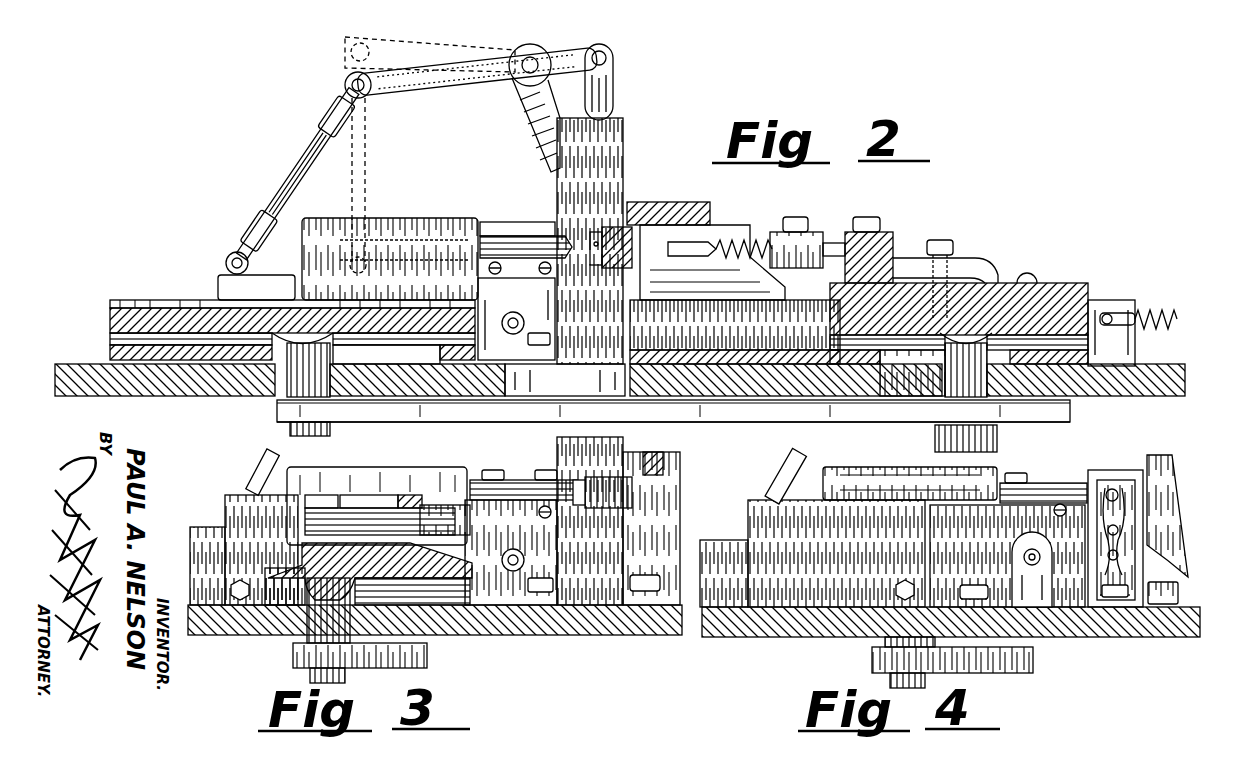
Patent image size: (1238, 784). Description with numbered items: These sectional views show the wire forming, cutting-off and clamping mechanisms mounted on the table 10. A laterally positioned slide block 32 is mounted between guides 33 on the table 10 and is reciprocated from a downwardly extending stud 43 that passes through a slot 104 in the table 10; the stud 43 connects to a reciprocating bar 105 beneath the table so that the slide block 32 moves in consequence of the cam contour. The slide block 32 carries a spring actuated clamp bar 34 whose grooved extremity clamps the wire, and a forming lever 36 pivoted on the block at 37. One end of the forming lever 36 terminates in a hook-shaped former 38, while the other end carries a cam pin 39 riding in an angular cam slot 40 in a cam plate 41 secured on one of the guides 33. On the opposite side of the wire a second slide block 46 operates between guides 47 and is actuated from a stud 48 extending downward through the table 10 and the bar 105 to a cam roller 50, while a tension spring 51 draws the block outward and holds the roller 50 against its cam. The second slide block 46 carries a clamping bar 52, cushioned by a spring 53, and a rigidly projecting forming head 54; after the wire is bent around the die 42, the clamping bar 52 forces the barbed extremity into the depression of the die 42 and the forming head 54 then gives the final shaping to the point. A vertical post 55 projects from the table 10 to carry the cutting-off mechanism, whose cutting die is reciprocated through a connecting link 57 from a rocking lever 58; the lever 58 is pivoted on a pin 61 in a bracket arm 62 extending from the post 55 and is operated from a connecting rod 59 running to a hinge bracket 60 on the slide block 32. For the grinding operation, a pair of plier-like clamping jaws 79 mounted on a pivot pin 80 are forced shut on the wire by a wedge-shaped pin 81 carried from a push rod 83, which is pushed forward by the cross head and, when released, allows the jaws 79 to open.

In FIG. 2, the table 10 is at (86, 366).
In FIG. 2, the slide block 32 is at (110, 316).
In FIG. 3, the slide block 32 is at (290, 545).
In FIG. 4, the guides 33 is at (738, 548).
In FIG. 2, the clamp bar 34 is at (495, 242).
In FIG. 3, the forming lever 36 is at (400, 520).
In FIG. 3, the pivot 37 is at (435, 505).
In FIG. 3, the hook-shaped former 38 is at (526, 490).
In FIG. 4, the hook-shaped former 38 is at (1062, 492).
In FIG. 3, the cam pin 39 is at (318, 496).
In FIG. 3, the cam slot 40 is at (362, 496).
In FIG. 3, the cam plate 41 is at (392, 496).
In FIG. 4, the cam plate 41 is at (760, 512).
In FIG. 2, the die 42 is at (615, 242).
In FIG. 3, the die 42 is at (633, 496).
In FIG. 2, the stud 43 is at (306, 381).
In FIG. 3, the stud 43 is at (320, 620).
In FIG. 2, the second slide block 46 is at (1058, 290).
In FIG. 2, the guides 47 is at (908, 378).
In FIG. 2, the stud 48 is at (960, 380).
In FIG. 2, the cam roller 50 is at (992, 435).
In FIG. 2, the tension spring 51 is at (1161, 308).
In FIG. 2, the clamping bar 52 is at (712, 240).
In FIG. 2, the spring 53 is at (748, 250).
In FIG. 2, the forming head 54 is at (737, 245).
In FIG. 2, the vertical post 55 is at (613, 152).
In FIG. 2, the connecting link 57 is at (604, 93).
In FIG. 2, the rocking lever 58 is at (418, 76).
In FIG. 2, the connecting rod 59 is at (300, 157).
In FIG. 2, the hinge bracket 60 is at (224, 264).
In FIG. 2, the pin 61 is at (533, 56).
In FIG. 2, the bracket arm 62 is at (540, 116).
In FIG. 4, the clamping jaws 79 is at (1127, 496).
In FIG. 4, the pivot pin 80 is at (1120, 530).
In FIG. 4, the wedge-shaped pin 81 is at (1118, 556).
In FIG. 2, the push rod 83 is at (524, 298).
In FIG. 3, the push rod 83 is at (511, 552).
In FIG. 4, the push rod 83 is at (1033, 563).
In FIG. 2, the slot 104 is at (375, 378).
In FIG. 2, the reciprocating bar 105 is at (694, 405).
In FIG. 3, the reciprocating bar 105 is at (425, 658).